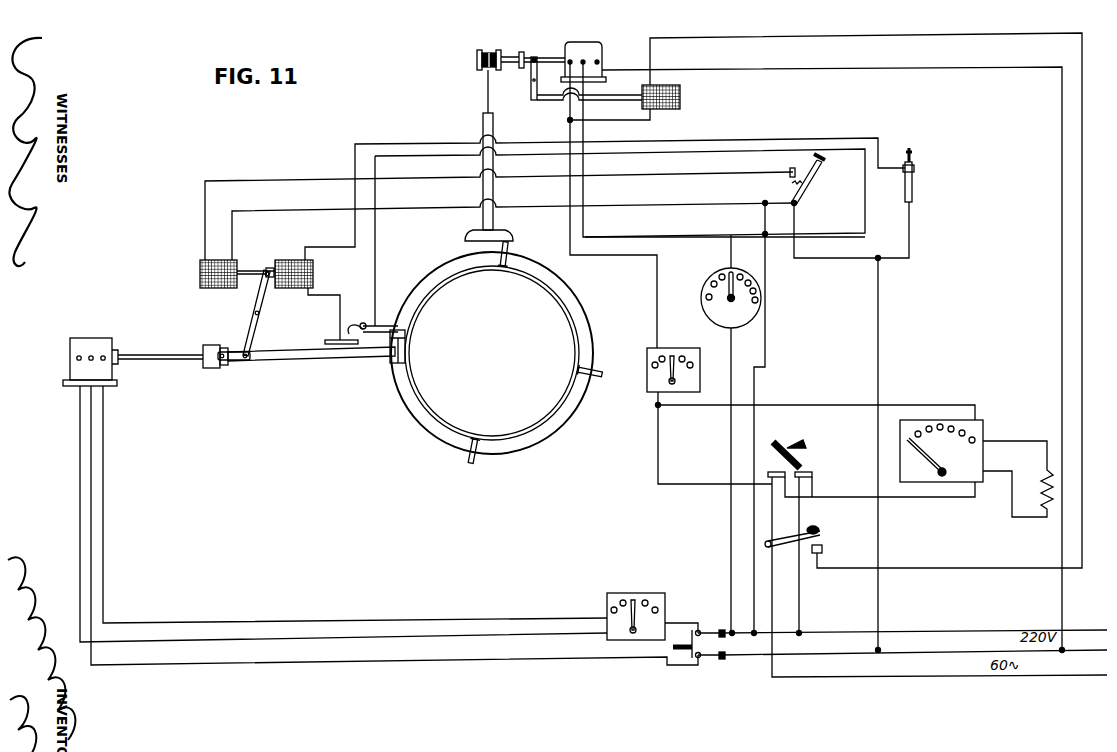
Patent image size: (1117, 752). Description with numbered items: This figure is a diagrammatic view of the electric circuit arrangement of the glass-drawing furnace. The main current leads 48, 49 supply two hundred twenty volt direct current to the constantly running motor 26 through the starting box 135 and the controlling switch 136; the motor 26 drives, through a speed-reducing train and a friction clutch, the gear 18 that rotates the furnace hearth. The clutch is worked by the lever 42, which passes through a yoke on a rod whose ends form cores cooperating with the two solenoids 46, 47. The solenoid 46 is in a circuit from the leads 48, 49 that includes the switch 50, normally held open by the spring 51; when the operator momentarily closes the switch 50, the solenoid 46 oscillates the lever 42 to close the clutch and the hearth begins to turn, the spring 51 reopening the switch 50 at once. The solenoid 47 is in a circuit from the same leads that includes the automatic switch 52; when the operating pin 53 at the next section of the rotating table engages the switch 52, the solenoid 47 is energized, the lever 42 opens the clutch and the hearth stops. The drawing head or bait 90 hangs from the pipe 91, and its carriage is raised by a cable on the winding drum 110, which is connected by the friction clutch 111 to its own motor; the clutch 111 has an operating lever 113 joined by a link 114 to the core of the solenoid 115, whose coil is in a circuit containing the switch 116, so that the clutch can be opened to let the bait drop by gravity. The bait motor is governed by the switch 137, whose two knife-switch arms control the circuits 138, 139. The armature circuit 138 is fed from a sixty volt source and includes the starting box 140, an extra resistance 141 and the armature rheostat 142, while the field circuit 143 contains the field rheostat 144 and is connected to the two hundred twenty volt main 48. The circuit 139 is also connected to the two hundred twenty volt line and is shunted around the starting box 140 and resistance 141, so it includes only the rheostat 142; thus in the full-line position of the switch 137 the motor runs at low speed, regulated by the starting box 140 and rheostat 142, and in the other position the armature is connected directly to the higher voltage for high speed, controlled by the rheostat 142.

The gear 18 is at (518, 247).
The motor 26 is at (108, 340).
The lever 42 is at (256, 305).
The solenoid 46 is at (200, 265).
The solenoid 47 is at (287, 262).
The main current lead 48 is at (1093, 629).
The main current lead 49 is at (1094, 651).
The switch 50 is at (808, 196).
The spring 51 is at (797, 176).
The automatic switch 52 is at (352, 330).
The operating pin 53 is at (389, 321).
The drawing head or bait 90 is at (468, 236).
The pipe 91 is at (493, 190).
The winding drum 110 is at (488, 50).
The friction clutch 111 is at (524, 52).
The operating lever 113 is at (531, 78).
The link 114 is at (620, 93).
The solenoid 115 is at (668, 110).
The switch 116 is at (826, 541).
The starting box 135 is at (617, 593).
The controlling switch 136 is at (716, 666).
The switch 137 is at (789, 434).
The circuit 138 is at (833, 492).
The circuit 139 is at (694, 488).
The starting box 140 is at (912, 420).
The extra resistance 141 is at (1045, 492).
The armature rheostat 142 is at (686, 342).
The field circuit 143 is at (735, 364).
The field rheostat 144 is at (707, 282).